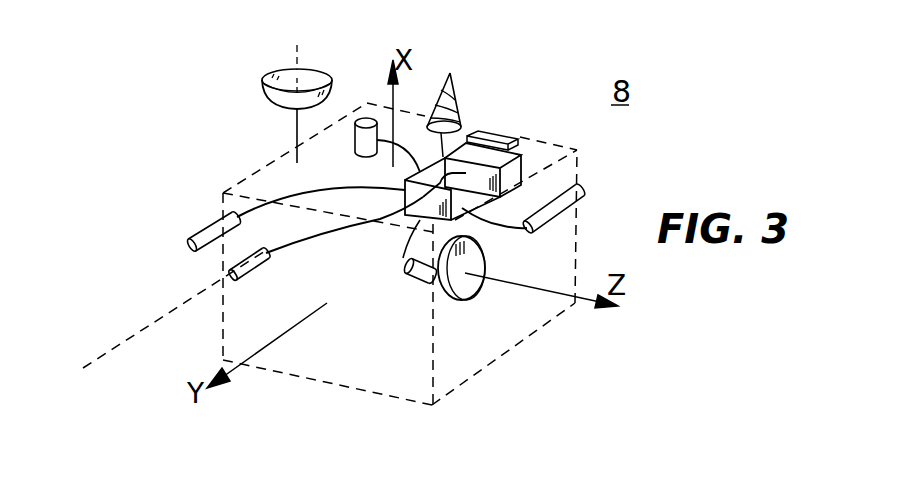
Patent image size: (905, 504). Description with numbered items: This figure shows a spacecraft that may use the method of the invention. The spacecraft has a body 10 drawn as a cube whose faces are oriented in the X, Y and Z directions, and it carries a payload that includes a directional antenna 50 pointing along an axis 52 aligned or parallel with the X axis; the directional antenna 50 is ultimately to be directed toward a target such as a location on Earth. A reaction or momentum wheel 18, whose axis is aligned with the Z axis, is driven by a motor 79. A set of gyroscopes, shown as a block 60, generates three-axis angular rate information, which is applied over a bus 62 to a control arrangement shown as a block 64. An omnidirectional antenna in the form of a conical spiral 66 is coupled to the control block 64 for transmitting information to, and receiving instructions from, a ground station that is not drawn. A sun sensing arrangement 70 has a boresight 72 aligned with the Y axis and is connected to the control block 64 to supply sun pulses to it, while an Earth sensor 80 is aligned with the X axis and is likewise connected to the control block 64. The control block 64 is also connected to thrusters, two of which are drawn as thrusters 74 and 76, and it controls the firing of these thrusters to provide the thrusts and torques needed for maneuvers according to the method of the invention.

The body 10 is at (475, 371).
The reaction or momentum wheel 18 is at (463, 300).
The directional antenna 50 is at (277, 105).
The axis 52 is at (297, 42).
The set of gyroscopes 60 is at (533, 157).
The bus 62 is at (470, 172).
The control arrangement 64 is at (500, 150).
The omnidirectional antenna 66 is at (445, 95).
The sun sensing arrangement 70 is at (254, 278).
The boresight 72 is at (140, 332).
The thruster 74 is at (198, 228).
The thruster 76 is at (567, 212).
The motor 79 is at (413, 274).
The Earth sensor 80 is at (353, 122).